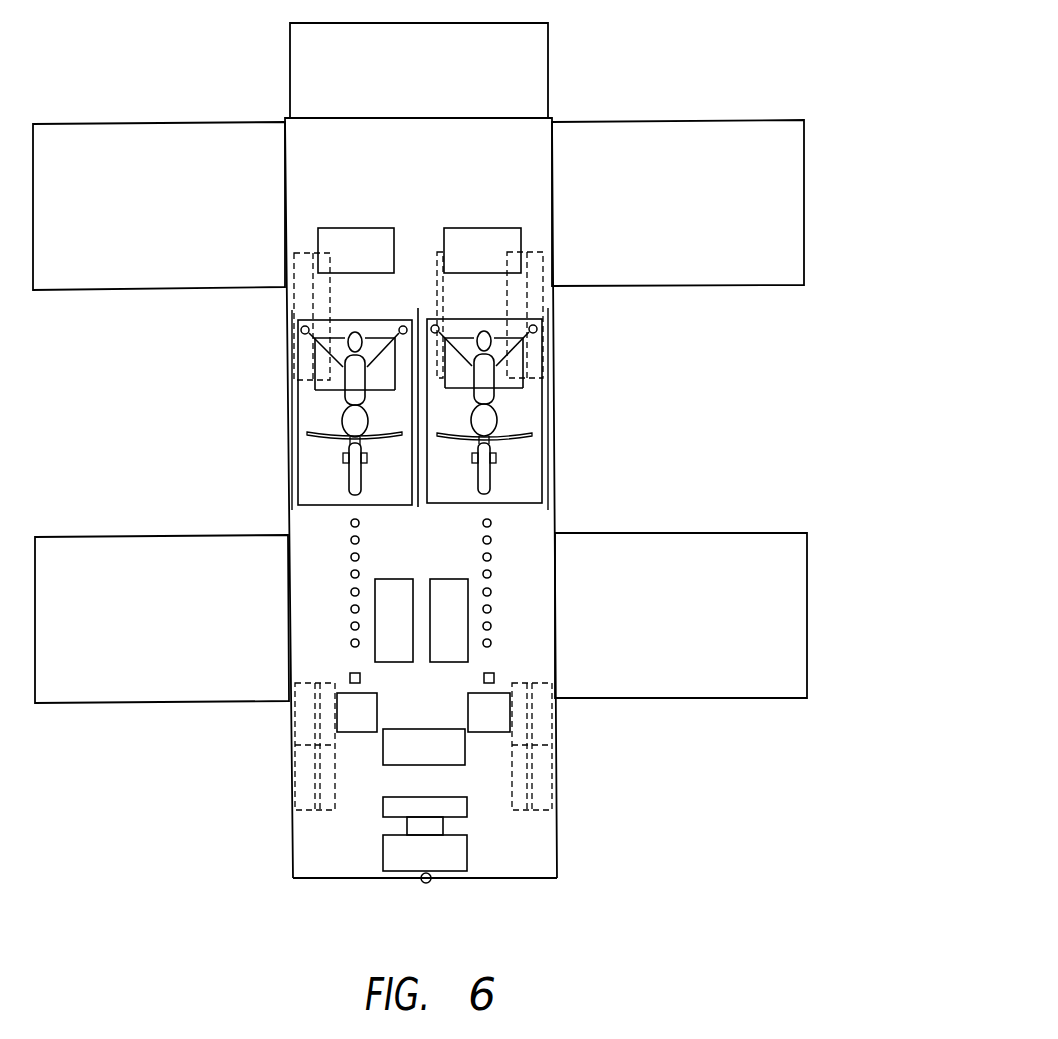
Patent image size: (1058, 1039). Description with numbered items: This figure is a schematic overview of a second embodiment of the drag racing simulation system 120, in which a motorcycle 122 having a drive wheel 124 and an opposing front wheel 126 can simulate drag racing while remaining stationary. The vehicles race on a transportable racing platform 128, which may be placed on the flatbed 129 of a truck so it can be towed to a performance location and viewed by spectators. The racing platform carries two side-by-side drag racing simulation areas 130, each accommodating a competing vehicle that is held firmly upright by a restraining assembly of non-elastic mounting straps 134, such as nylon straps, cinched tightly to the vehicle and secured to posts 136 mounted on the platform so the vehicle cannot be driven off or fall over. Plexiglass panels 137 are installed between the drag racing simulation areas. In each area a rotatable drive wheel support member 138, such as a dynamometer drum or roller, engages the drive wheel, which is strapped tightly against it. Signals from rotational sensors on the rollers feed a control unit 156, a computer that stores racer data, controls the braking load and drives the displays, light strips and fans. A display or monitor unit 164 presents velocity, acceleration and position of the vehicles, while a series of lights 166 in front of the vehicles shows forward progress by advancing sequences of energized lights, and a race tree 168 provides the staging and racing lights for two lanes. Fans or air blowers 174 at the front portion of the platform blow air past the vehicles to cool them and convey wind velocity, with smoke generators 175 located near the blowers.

The drag racing simulation system 120 is at (672, 88).
The motorcycle 122 is at (345, 405).
The drive wheel 124 is at (350, 333).
The front wheel 126 is at (349, 473).
The racing platform 128 is at (528, 527).
The flatbed 129 is at (305, 852).
The drag racing simulation areas 130 is at (304, 452).
The non-elastic mounting straps 134 is at (313, 362).
The posts 136 is at (301, 330).
The Plexiglass panels 137 is at (291, 511).
The rotatable drive wheel support member 138 is at (380, 383).
The control unit 156 is at (440, 797).
The display or monitor unit 164 is at (413, 662).
The series of lights 166 is at (351, 626).
The race tree 168 is at (449, 862).
The fans or air blowers 174 is at (340, 713).
The smoke generators 175 is at (350, 678).